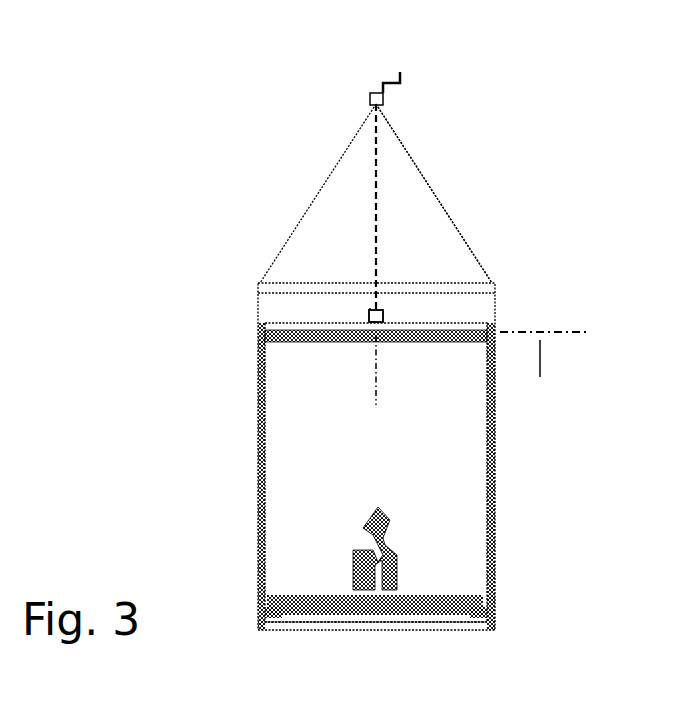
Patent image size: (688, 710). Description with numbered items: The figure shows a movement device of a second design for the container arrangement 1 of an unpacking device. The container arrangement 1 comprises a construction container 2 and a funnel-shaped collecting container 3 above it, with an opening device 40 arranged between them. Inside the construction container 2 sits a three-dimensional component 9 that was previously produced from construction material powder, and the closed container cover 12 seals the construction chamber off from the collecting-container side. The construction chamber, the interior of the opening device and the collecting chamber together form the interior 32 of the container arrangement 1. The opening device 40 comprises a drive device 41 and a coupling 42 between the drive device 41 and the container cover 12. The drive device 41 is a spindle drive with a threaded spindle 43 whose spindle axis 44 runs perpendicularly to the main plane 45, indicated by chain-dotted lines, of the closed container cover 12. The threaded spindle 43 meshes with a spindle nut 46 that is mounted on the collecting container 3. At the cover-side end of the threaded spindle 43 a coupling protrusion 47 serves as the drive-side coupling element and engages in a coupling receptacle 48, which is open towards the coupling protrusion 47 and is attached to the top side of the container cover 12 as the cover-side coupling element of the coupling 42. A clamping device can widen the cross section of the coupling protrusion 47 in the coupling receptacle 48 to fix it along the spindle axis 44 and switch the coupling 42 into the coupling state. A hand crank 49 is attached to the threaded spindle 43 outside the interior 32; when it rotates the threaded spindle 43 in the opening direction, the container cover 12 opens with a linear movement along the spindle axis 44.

The container arrangement 1 is at (253, 223).
The construction container 2 is at (237, 482).
The funnel-shaped collecting container 3 is at (317, 165).
The three-dimensional component 9 is at (395, 542).
The container cover 12 is at (305, 340).
The interior of the container arrangement 32 is at (427, 470).
The opening device 40 is at (228, 288).
The drive device 41 is at (393, 118).
The coupling 42 is at (365, 305).
The threaded spindle 43 is at (376, 183).
The spindle axis 44 is at (380, 375).
The main plane 45 is at (544, 371).
The spindle nut 46 is at (372, 95).
The coupling protrusion 47 is at (382, 310).
The coupling receptacle 48 is at (382, 315).
The hand crank 49 is at (400, 72).